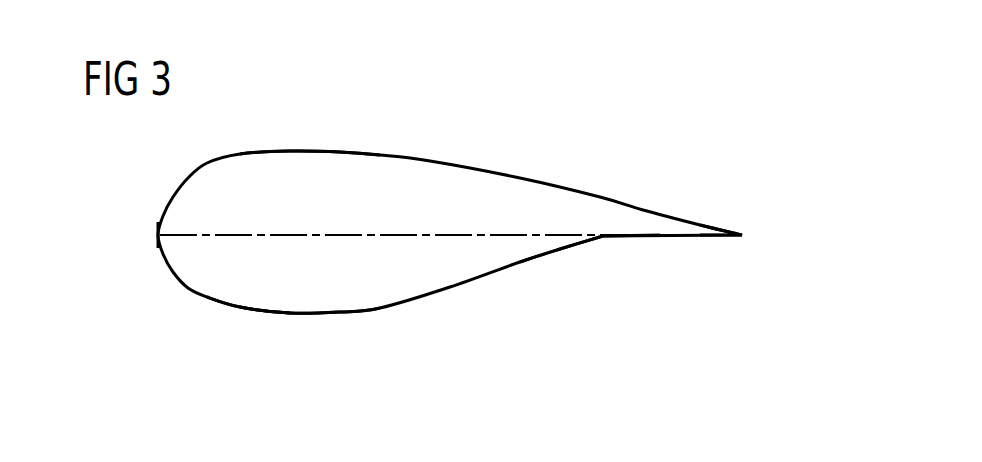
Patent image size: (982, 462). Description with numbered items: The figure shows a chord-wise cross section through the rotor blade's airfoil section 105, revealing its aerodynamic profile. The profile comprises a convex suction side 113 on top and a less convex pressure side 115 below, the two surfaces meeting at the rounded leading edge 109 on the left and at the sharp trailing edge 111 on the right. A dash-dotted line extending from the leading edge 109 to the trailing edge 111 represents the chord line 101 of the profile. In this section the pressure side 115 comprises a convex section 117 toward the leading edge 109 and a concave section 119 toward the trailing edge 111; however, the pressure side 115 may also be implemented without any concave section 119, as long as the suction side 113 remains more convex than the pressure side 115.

The airfoil section 105 is at (443, 137).
The chord line 101 is at (340, 233).
The leading edge 109 is at (158, 235).
The trailing edge 111 is at (742, 234).
The suction side 113 is at (318, 150).
The pressure side 115 is at (322, 312).
The convex section 117 is at (240, 340).
The concave section 119 is at (603, 272).